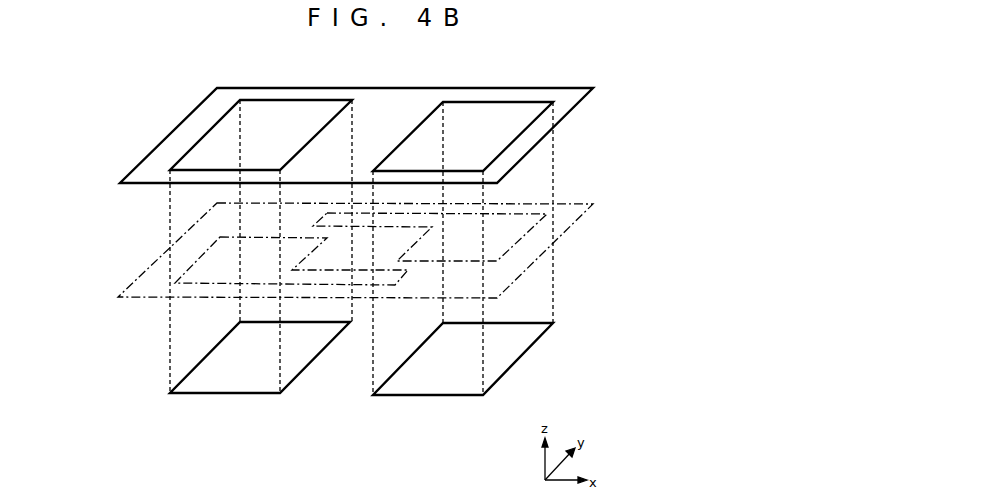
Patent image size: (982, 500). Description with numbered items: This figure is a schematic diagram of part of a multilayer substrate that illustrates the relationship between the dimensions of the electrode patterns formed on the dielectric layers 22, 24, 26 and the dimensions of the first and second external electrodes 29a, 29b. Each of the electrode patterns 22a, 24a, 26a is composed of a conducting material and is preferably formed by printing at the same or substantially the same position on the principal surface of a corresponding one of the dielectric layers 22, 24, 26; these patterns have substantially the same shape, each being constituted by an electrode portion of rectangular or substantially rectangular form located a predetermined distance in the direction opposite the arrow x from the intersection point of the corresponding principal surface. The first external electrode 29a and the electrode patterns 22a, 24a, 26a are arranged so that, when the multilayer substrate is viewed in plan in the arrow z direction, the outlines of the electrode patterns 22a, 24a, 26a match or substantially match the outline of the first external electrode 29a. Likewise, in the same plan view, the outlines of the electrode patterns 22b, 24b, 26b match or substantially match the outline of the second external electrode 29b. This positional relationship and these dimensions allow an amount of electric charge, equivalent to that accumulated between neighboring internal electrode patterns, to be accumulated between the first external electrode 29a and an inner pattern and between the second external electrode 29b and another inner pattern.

The dielectric layer 22 is at (419, 128).
The dielectric layer 24 is at (419, 128).
The dielectric layer 26 is at (419, 128).
The electrode pattern 22a is at (213, 246).
The electrode pattern 24a is at (213, 246).
The electrode pattern 26a is at (222, 140).
The electrode pattern 22b is at (521, 248).
The electrode pattern 24b is at (521, 248).
The electrode pattern 26b is at (521, 248).
The first external electrode 29a is at (200, 360).
The second external electrode 29b is at (487, 359).